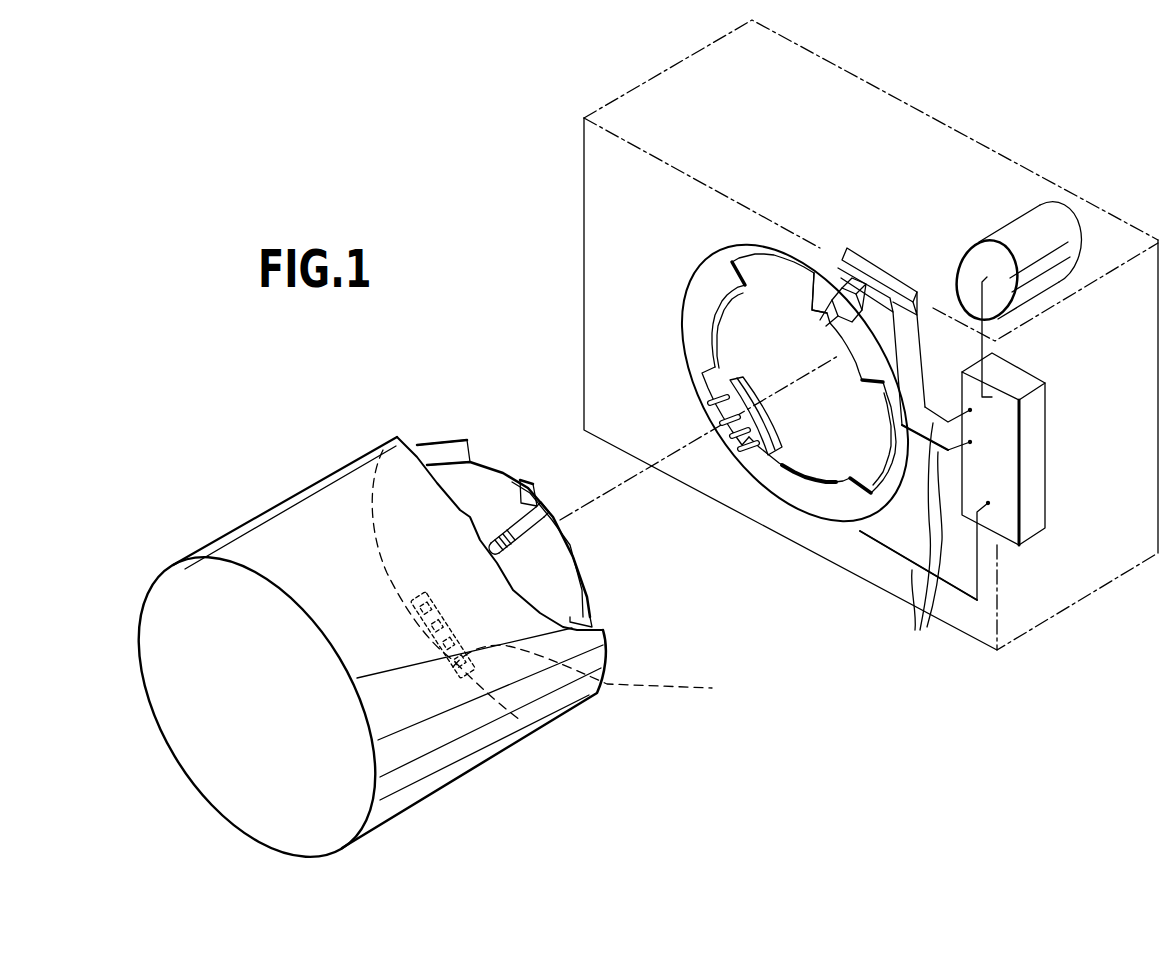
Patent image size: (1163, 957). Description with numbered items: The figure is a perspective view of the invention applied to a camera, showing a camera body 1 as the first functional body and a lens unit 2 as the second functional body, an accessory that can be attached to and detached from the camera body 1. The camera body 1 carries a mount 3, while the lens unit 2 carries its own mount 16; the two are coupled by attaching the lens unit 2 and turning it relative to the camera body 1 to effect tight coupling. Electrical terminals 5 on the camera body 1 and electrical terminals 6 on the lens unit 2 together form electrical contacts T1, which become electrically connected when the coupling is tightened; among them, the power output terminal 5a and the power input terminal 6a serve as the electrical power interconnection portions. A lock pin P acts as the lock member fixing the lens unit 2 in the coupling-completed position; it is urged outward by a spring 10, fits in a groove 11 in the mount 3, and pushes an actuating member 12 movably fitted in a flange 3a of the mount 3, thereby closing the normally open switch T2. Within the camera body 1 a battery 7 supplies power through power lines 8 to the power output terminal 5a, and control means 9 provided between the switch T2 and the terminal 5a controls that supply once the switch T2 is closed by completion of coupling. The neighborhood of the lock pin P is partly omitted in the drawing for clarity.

The camera body 1 is at (1060, 612).
The lens unit 2 is at (462, 740).
The mount 3 is at (695, 293).
The flange 3a is at (823, 316).
The electrical terminals 5 is at (782, 437).
The electrical power output terminal 5a is at (738, 447).
The electrical terminals 6 is at (593, 673).
The electrical power input terminal 6a is at (453, 667).
The battery 7 is at (1058, 232).
The power lines 8 is at (990, 325).
The control means 9 is at (1040, 483).
The spring 10 is at (510, 530).
The groove 11 is at (828, 320).
The actuating member 12 is at (874, 268).
The mount 16 is at (527, 483).
The lock pin P is at (513, 527).
The electrical contacts T1 is at (752, 618).
The switch T2 is at (849, 258).